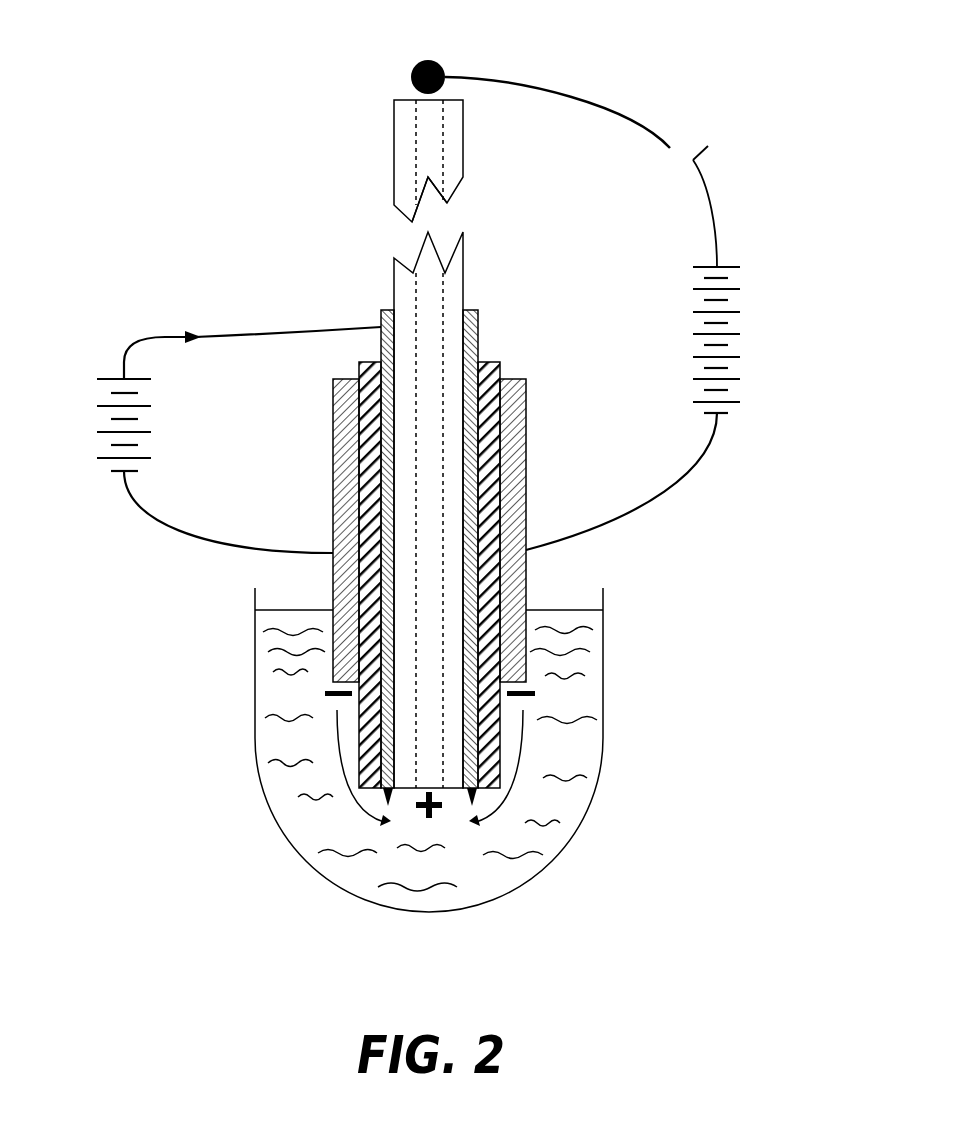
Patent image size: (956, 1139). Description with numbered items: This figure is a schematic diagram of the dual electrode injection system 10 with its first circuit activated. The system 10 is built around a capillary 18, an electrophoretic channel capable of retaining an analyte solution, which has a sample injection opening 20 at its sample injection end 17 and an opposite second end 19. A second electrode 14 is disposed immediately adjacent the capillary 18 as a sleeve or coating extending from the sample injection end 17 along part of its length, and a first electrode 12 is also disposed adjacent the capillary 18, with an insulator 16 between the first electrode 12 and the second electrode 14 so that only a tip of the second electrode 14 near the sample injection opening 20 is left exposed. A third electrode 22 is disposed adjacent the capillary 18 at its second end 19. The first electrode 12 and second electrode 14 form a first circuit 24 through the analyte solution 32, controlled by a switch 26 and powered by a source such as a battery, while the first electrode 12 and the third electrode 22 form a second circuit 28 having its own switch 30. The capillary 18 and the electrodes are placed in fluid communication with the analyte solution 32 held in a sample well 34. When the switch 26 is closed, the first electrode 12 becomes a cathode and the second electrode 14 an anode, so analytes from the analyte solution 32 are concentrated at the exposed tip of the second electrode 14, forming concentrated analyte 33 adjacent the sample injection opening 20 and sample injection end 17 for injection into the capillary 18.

The system 10 is at (212, 60).
The first electrode 12 is at (333, 480).
The second electrode 14 is at (380, 320).
The insulator 16 is at (359, 368).
The sample injection end 17 is at (452, 790).
The capillary 18 is at (403, 125).
The second end 19 is at (463, 100).
The sample injection opening 20 is at (427, 178).
The third electrode 22 is at (438, 63).
The first circuit 24 is at (86, 423).
The switch 26 is at (178, 335).
The second circuit 28 is at (755, 347).
The switch 30 is at (708, 150).
The analyte solution 32 is at (268, 692).
The concentrated analyte 33 is at (390, 803).
The sample well 34 is at (605, 700).